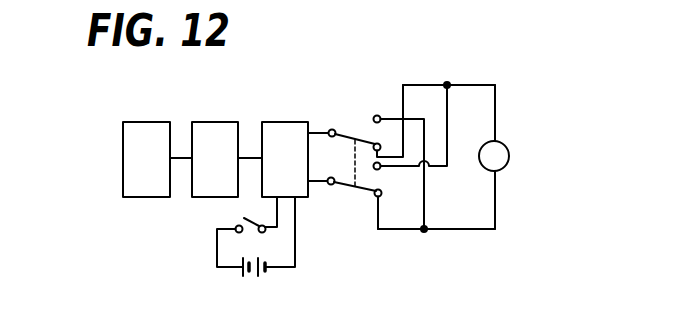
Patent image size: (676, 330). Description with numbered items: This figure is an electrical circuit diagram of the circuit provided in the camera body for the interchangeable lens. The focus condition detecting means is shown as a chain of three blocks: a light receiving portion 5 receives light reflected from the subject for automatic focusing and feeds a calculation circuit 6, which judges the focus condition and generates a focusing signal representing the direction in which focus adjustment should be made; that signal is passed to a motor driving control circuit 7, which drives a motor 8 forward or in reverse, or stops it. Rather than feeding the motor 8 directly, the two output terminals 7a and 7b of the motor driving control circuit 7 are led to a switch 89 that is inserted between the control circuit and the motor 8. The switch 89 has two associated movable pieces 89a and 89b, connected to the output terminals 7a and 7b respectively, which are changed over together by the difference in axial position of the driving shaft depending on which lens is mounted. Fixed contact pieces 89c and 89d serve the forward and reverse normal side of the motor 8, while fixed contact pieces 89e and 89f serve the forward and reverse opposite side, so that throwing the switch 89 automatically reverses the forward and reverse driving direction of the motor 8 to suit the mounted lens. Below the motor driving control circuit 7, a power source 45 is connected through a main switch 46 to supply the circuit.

The light receiving portion 5 is at (155, 170).
The calculation circuit 6 is at (224, 170).
The motor driving control circuit 7 is at (294, 170).
The output terminal 7a is at (313, 131).
The output terminal 7b is at (319, 184).
The motor 8 is at (509, 157).
The power source 45 is at (256, 272).
The main switch 46 is at (250, 222).
The switch 89 is at (334, 119).
The movable piece 89a is at (356, 143).
The movable piece 89b is at (368, 187).
The fixed contact piece 89c is at (373, 148).
The fixed contact piece 89d is at (378, 198).
The fixed contact piece 89e is at (380, 115).
The fixed contact piece 89f is at (379, 170).